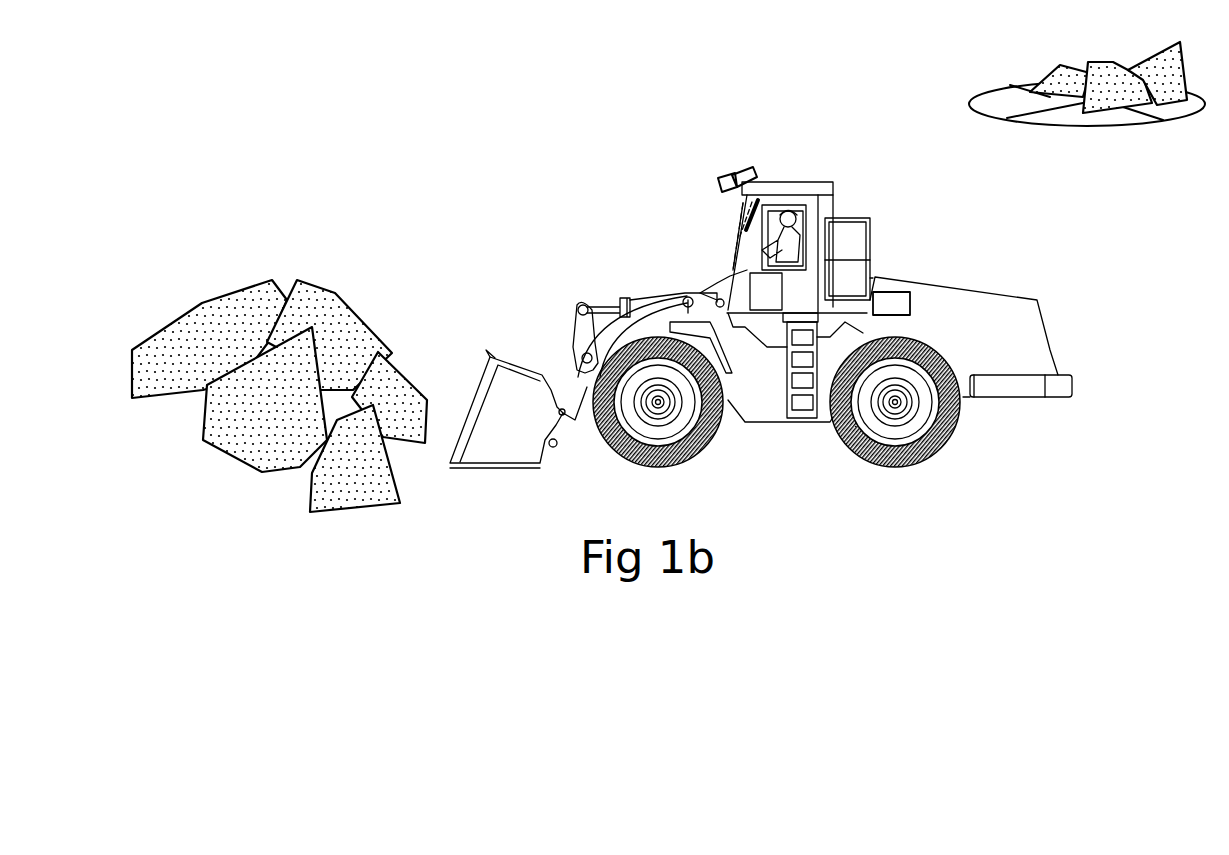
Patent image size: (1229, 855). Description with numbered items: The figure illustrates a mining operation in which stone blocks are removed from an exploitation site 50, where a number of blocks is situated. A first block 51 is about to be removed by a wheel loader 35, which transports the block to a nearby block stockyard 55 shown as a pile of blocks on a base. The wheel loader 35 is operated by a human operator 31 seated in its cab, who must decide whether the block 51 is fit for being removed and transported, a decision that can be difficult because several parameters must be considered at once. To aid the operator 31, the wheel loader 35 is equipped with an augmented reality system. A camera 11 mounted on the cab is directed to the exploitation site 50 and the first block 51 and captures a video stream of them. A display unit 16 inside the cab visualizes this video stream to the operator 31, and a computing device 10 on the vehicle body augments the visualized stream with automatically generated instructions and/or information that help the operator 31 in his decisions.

The computing device 10 is at (900, 300).
The camera 11 is at (742, 170).
The display unit 16 is at (747, 208).
The human operator 31 is at (807, 220).
The wheel loader 35 is at (815, 155).
The exploitation site 50 is at (252, 255).
The first block 51 is at (407, 423).
The block stockyard 55 is at (1007, 68).